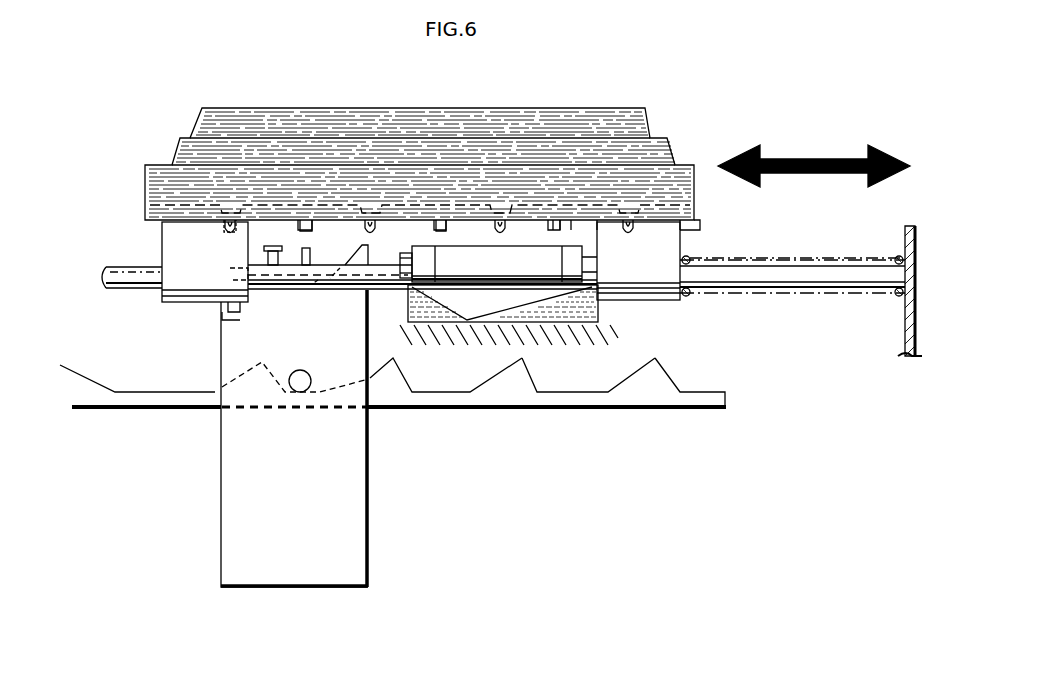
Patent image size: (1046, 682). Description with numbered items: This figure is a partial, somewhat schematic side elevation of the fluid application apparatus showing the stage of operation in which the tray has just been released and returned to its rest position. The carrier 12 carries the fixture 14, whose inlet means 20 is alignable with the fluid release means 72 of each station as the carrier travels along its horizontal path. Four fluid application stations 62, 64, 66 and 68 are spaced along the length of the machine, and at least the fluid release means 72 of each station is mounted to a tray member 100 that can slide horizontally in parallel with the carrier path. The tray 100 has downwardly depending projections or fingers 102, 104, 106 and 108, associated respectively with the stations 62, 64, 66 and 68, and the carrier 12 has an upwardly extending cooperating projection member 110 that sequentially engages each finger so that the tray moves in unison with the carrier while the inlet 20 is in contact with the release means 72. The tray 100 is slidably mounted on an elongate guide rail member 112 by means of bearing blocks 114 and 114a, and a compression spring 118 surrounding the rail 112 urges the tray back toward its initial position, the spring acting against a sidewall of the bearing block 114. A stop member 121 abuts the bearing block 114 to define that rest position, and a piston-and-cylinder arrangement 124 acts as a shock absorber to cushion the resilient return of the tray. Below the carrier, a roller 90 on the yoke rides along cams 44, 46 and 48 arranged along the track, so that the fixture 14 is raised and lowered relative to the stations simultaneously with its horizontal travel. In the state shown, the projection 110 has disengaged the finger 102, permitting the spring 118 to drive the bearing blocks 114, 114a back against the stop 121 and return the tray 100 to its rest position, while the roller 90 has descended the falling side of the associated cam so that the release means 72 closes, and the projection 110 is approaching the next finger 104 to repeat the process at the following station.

The tray member 100 is at (145, 183).
The fluid application station 62 is at (226, 197).
The fluid application station 64 is at (366, 197).
The fluid application station 66 is at (498, 197).
The fluid application station 68 is at (628, 197).
The downwardly depending projection 102 is at (300, 225).
The downwardly depending projection 104 is at (436, 225).
The downwardly depending projection 106 is at (560, 227).
The downwardly depending projection 108 is at (700, 226).
The fluid release means 72 is at (216, 229).
The bearing block 114a is at (206, 272).
The bearing block 114 is at (642, 259).
The fixture 14 is at (280, 232).
The inlet means 20 is at (310, 248).
The cooperating projection member 110 is at (400, 249).
The piston-and-cylinder arrangement 124 is at (504, 264).
The stop member 121 is at (598, 310).
The elongate guide rail member 112 is at (782, 280).
The compression spring 118 is at (818, 252).
The roller 90 is at (303, 370).
The cam surface 44 is at (392, 366).
The cam surface 46 is at (524, 362).
The cam surface 48 is at (660, 358).
The carrier member 12 is at (368, 468).